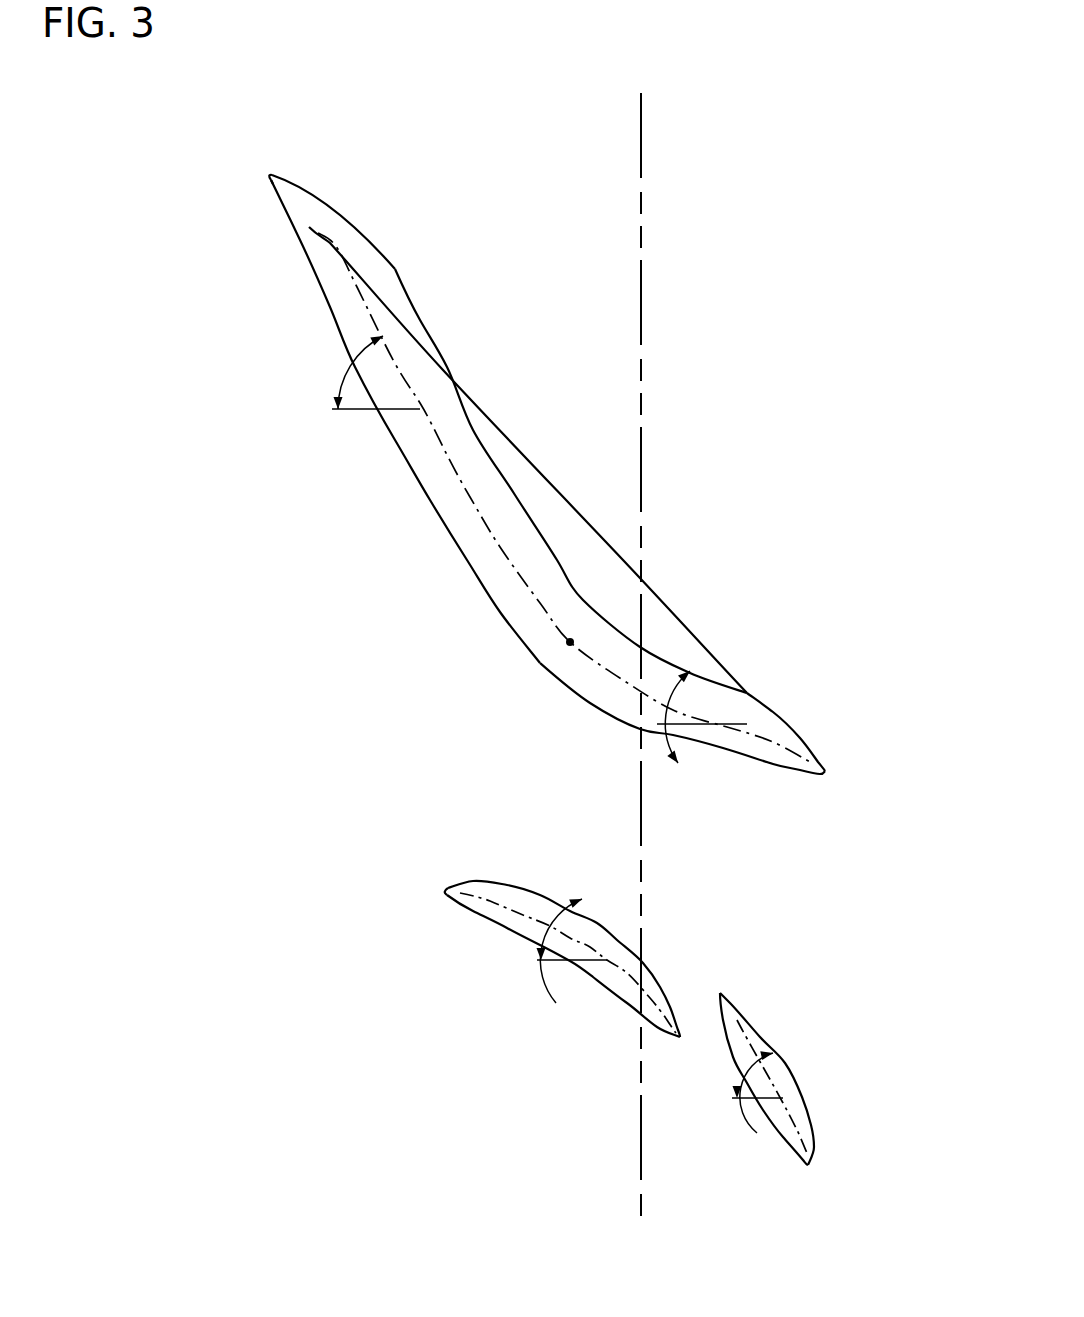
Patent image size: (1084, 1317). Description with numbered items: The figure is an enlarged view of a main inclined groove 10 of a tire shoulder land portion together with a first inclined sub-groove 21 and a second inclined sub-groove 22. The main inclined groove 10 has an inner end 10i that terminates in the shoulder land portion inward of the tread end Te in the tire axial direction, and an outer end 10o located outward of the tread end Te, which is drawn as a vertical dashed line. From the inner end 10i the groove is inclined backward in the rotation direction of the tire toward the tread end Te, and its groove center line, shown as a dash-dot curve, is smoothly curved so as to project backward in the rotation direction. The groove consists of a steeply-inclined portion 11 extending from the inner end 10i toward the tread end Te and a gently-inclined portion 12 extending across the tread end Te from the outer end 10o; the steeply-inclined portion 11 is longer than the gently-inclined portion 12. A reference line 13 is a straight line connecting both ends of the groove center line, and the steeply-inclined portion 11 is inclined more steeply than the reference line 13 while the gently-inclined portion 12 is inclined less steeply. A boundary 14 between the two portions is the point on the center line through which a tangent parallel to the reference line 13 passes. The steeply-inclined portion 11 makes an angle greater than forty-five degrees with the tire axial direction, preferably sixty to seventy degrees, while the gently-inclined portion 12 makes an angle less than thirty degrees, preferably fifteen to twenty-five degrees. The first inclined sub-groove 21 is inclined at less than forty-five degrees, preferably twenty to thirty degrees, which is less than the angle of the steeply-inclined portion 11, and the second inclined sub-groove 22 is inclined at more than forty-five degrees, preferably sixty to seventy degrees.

The main inclined groove 10 is at (551, 443).
The inner end 10i is at (270, 176).
The outer end 10o is at (825, 771).
The steeply-inclined portion 11 is at (442, 480).
The gently-inclined portion 12 is at (597, 688).
The reference line 13 is at (680, 620).
The boundary 14 is at (570, 643).
The first inclined sub-groove 21 is at (601, 958).
The second inclined sub-groove 22 is at (784, 1069).
The tread end Te is at (643, 143).